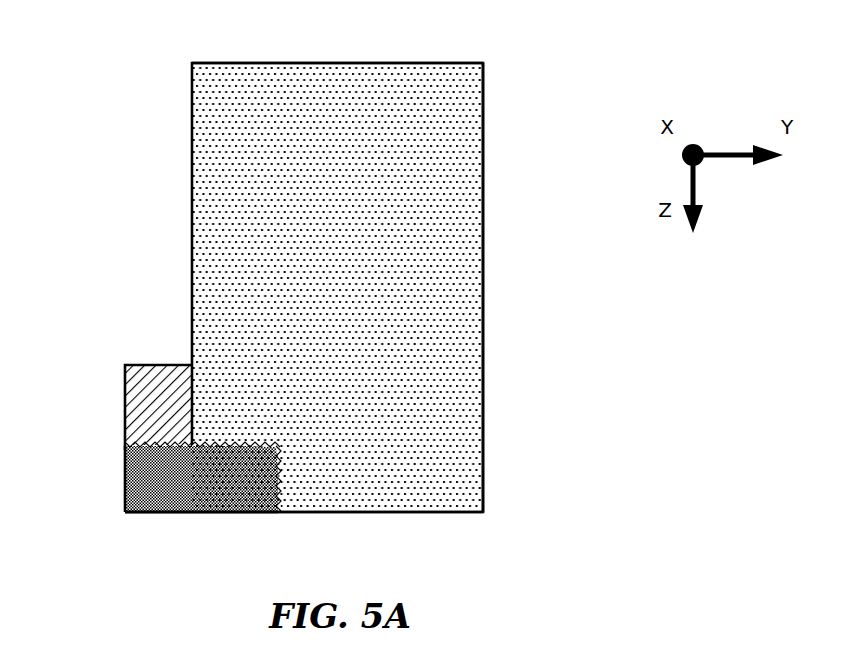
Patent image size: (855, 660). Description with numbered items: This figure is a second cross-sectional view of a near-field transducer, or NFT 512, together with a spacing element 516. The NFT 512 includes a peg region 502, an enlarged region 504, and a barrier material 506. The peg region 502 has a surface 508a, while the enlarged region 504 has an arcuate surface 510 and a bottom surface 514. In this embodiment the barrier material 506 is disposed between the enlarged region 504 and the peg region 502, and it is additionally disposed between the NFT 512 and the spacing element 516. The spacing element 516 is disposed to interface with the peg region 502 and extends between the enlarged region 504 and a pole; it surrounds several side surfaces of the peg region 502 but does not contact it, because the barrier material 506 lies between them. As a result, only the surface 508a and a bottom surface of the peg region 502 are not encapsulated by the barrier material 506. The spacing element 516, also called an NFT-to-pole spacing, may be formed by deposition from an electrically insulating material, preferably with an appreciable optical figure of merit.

The peg region 502 is at (173, 543).
The enlarged region 504 is at (170, 172).
The barrier material 506 is at (278, 468).
The surface 508a is at (125, 475).
The arcuate surface 510 is at (484, 302).
The NFT 512 is at (525, 115).
The bottom surface 514 is at (465, 513).
The spacing element 516 is at (140, 385).